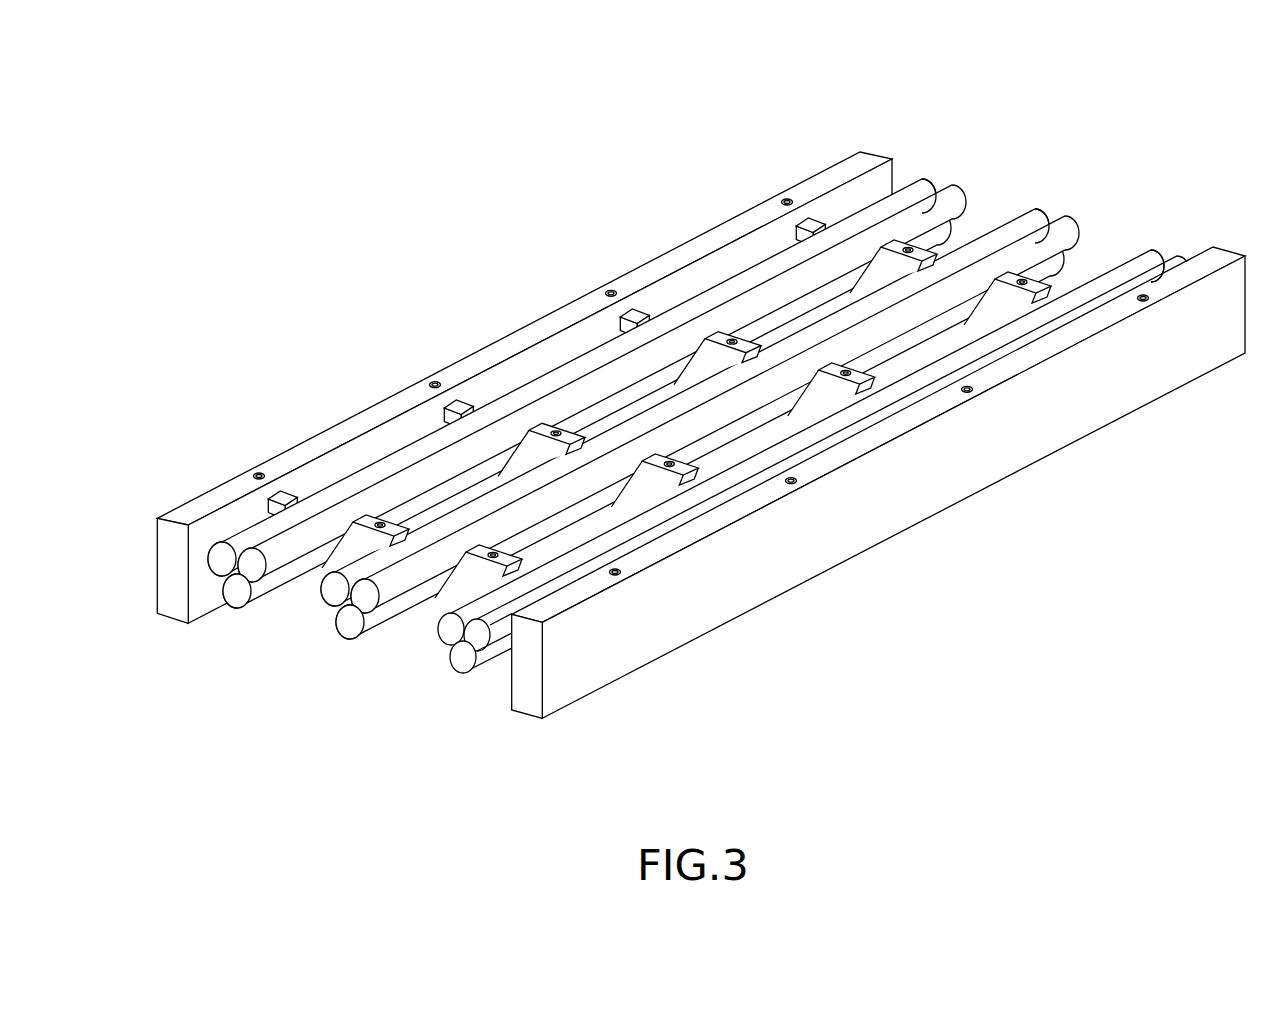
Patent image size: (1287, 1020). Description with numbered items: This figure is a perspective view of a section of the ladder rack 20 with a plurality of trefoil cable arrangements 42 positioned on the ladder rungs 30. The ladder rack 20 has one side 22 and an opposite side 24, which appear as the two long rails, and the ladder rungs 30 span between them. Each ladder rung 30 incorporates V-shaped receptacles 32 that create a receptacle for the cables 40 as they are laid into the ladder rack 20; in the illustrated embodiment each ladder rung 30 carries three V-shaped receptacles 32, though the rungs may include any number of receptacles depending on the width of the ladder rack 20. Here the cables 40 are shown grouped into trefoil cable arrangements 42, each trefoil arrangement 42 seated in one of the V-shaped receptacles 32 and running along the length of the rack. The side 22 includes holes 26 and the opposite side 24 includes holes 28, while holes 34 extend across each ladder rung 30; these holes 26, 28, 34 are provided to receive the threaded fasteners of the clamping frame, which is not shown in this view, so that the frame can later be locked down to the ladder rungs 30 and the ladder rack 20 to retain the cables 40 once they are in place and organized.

The ladder rack 20 is at (701, 390).
The side of the ladder rack 22 is at (345, 430).
The opposite side of the ladder rack 24 is at (745, 503).
The holes in side 26 is at (435, 385).
The holes in opposite side 28 is at (625, 573).
The ladder rung 30 is at (607, 405).
The V-shaped receptacle 32 is at (438, 598).
The holes across the ladder rung 34 is at (517, 557).
The cable 40 is at (945, 212).
The trefoil cable arrangement 42 is at (940, 183).